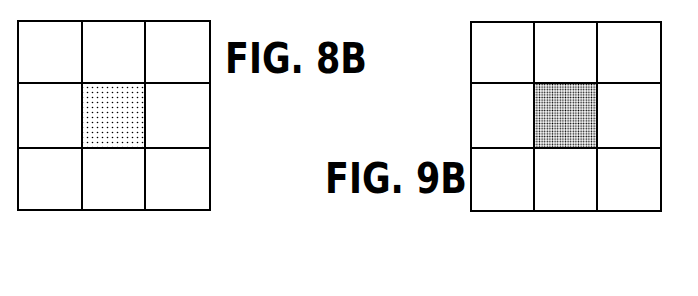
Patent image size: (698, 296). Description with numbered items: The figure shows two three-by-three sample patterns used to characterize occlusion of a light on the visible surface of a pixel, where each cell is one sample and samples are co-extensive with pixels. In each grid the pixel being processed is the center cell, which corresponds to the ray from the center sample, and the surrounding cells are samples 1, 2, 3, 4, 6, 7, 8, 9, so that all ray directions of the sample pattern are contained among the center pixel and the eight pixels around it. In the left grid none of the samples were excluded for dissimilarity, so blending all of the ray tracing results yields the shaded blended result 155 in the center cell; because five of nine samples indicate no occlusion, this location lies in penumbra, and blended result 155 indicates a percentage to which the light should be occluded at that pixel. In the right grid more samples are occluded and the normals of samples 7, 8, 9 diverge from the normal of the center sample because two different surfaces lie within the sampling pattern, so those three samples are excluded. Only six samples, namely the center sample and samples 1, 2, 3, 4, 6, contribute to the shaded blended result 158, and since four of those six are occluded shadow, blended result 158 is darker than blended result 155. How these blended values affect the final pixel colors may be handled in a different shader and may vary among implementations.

In FIG. 8B, the blended result 155 is at (137, 160).
In FIG. 9B, the blended result 158 is at (533, 162).
In FIG. 8B, the sample 1 is at (50, 52).
In FIG. 9B, the sample 1 is at (502, 52).
In FIG. 8B, the sample 2 is at (113, 52).
In FIG. 9B, the sample 2 is at (565, 52).
In FIG. 8B, the sample 3 is at (177, 52).
In FIG. 9B, the sample 3 is at (629, 52).
In FIG. 8B, the sample 4 is at (50, 115).
In FIG. 9B, the sample 4 is at (502, 115).
In FIG. 8B, the sample 6 is at (177, 115).
In FIG. 9B, the sample 6 is at (629, 115).
In FIG. 8B, the sample 7 is at (50, 179).
In FIG. 9B, the sample 7 is at (502, 179).
In FIG. 8B, the sample 8 is at (113, 179).
In FIG. 9B, the sample 8 is at (565, 179).
In FIG. 8B, the sample 9 is at (177, 179).
In FIG. 9B, the sample 9 is at (629, 179).